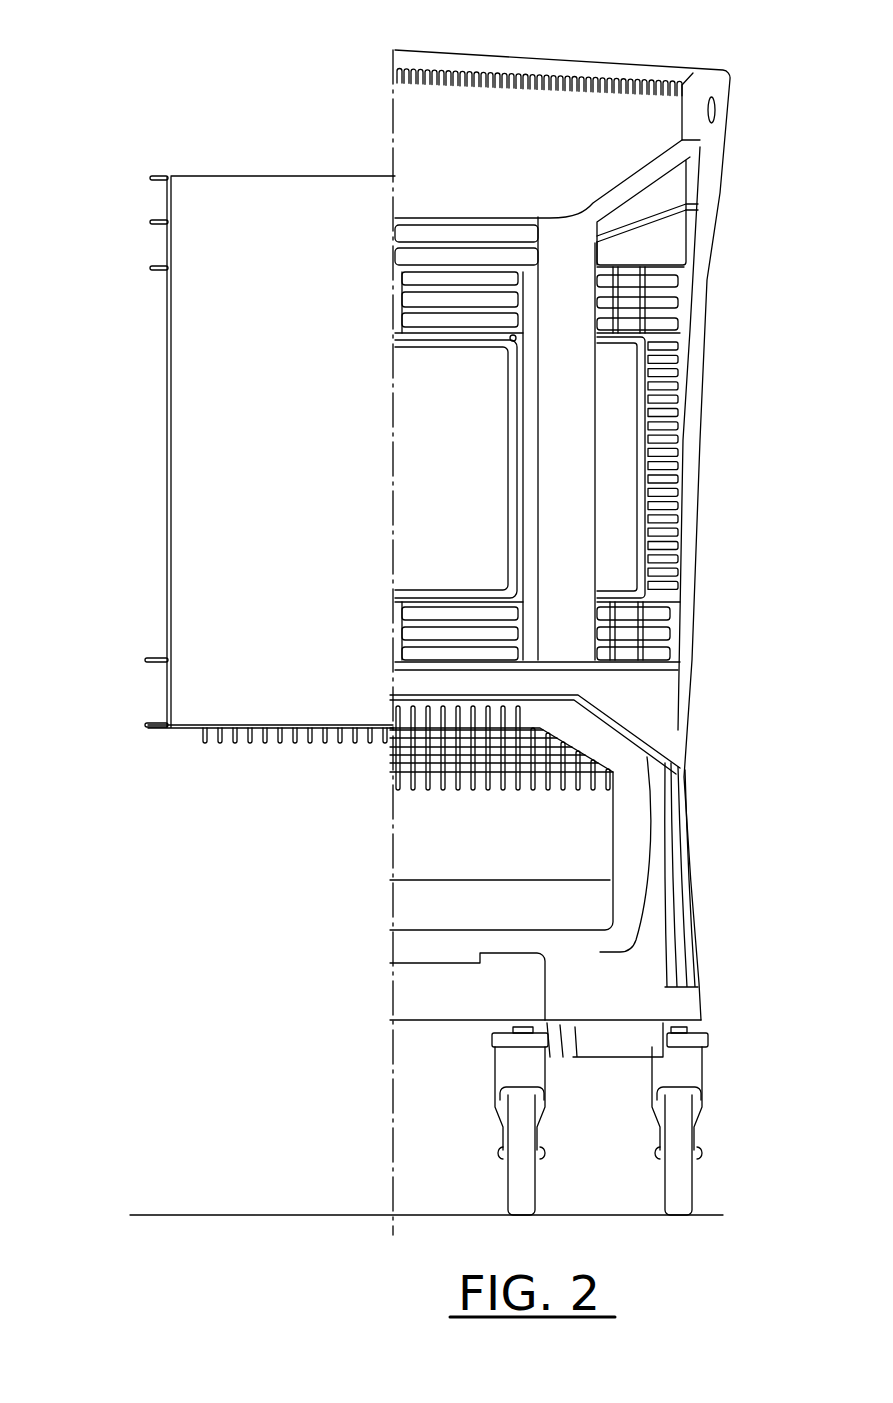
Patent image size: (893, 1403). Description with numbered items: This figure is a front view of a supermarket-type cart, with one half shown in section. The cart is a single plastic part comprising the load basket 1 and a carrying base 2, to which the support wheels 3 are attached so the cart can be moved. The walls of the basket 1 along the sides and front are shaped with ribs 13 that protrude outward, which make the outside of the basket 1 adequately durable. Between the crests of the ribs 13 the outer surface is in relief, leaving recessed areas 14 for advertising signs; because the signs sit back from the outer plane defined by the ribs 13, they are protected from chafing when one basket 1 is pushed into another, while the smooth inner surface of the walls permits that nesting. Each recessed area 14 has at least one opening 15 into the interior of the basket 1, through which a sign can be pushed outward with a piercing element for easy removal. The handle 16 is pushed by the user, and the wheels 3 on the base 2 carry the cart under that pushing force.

The load basket 1 is at (698, 513).
The carrying base 2 is at (513, 990).
The support wheels 3 is at (686, 1185).
The ribs 13 is at (152, 268).
The recessed areas 14 is at (167, 475).
The opening 15 is at (523, 340).
The handle 16 is at (611, 69).